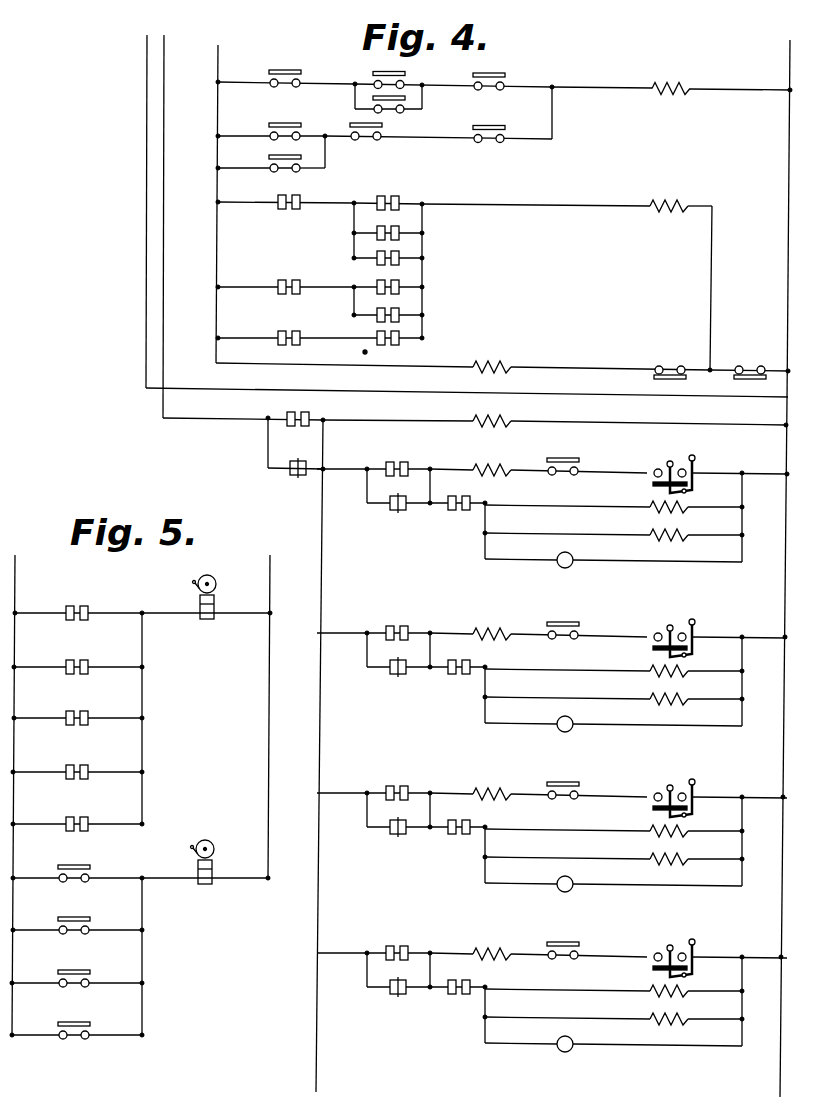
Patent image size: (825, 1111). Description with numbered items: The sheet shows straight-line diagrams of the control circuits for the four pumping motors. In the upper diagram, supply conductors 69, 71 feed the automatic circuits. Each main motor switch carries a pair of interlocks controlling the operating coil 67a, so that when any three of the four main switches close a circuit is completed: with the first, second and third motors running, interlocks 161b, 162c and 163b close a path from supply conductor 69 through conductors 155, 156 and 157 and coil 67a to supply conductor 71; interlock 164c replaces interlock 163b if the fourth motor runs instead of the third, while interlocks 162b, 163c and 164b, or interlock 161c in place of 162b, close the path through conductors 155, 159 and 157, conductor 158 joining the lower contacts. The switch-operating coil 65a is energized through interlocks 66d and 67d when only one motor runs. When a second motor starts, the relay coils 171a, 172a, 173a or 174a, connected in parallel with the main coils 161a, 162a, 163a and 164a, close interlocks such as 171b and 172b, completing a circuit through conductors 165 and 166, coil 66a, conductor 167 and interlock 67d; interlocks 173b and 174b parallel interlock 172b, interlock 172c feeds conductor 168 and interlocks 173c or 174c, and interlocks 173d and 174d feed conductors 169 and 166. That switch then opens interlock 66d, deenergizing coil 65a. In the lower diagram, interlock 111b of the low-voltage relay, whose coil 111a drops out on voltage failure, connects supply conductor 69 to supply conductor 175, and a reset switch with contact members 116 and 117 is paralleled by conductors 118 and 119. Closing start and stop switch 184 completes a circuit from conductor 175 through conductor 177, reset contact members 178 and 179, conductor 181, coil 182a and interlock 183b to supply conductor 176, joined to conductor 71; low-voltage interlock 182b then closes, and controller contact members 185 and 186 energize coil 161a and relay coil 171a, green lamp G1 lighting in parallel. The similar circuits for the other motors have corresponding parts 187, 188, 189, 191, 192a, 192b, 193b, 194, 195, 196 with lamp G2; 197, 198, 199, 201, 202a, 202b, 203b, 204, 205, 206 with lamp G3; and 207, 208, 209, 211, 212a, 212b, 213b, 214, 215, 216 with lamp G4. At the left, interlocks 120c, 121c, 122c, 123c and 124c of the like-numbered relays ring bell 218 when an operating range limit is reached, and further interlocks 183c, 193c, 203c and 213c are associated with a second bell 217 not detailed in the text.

In FIG. 4, the supply conductor 69 is at (218, 52).
In FIG. 5, the supply conductor 69 is at (15, 564).
In FIG. 4, the supply conductor 71 is at (789, 45).
In FIG. 5, the supply conductor 71 is at (270, 601).
In FIG. 4, the conductor 155 is at (331, 82).
In FIG. 4, the conductor 156 is at (452, 95).
In FIG. 4, the conductor 157 is at (593, 90).
In FIG. 4, the conductor 158 is at (330, 141).
In FIG. 4, the conductor 159 is at (440, 140).
In FIG. 4, the interlock 161b is at (287, 68).
In FIG. 4, the interlock 162b is at (270, 119).
In FIG. 4, the interlock 161c is at (258, 157).
In FIG. 4, the interlock 163b is at (396, 69).
In FIG. 4, the interlock 162c is at (495, 70).
In FIG. 4, the interlock 164c is at (403, 111).
In FIG. 4, the interlock 164b is at (512, 115).
In FIG. 4, the interlock 163c is at (372, 146).
In FIG. 4, the operating coil 67a is at (648, 86).
In FIG. 4, the coil 66a is at (672, 203).
In FIG. 4, the switch-operating coil 65a is at (498, 363).
In FIG. 4, the interlock 66d is at (667, 366).
In FIG. 4, the interlock 67d is at (750, 366).
In FIG. 4, the interlock 171b is at (282, 197).
In FIG. 4, the conductor 165 is at (323, 204).
In FIG. 4, the interlock 172b is at (400, 203).
In FIG. 4, the conductor 166 is at (519, 206).
In FIG. 4, the conductor 167 is at (712, 283).
In FIG. 4, the interlock 173b is at (424, 232).
In FIG. 4, the interlock 174b is at (424, 258).
In FIG. 4, the interlock 173c is at (424, 287).
In FIG. 4, the interlock 174c is at (424, 315).
In FIG. 4, the interlock 174d is at (424, 338).
In FIG. 4, the interlock 172c is at (285, 296).
In FIG. 4, the conductor 168 is at (325, 289).
In FIG. 4, the interlock 173d is at (284, 346).
In FIG. 4, the conductor 169 is at (327, 339).
In FIG. 5, the interlock 111b is at (297, 413).
In FIG. 5, the coil 111a is at (513, 422).
In FIG. 5, the conductor 118 is at (267, 451).
In FIG. 5, the contact member 117 is at (277, 481).
In FIG. 5, the contact member 116 is at (285, 467).
In FIG. 5, the conductor 119 is at (310, 472).
In FIG. 5, the supply conductor 175 is at (321, 534).
In FIG. 5, the supply conductor 176 is at (784, 612).
In FIG. 5, the conductor 177 is at (365, 476).
In FIG. 5, the low-voltage interlock 182b is at (401, 458).
In FIG. 5, the coil 182a is at (538, 458).
In FIG. 5, the interlock 183b is at (566, 457).
In FIG. 5, the start and stop switch 184 is at (669, 463).
In FIG. 5, the conductor 181 is at (431, 486).
In FIG. 5, the contact member 186 is at (486, 502).
In FIG. 5, the reset contact member 178 is at (395, 514).
In FIG. 5, the reset contact member 179 is at (393, 511).
In FIG. 5, the contact member 185 is at (457, 511).
In FIG. 5, the operating coil 161a is at (650, 509).
In FIG. 5, the relay operating coil 171a is at (655, 537).
In FIG. 5, the green lamp G1 is at (557, 565).
In FIG. 5, the conductor 187 is at (343, 661).
In FIG. 5, the relay contact 192b is at (397, 617).
In FIG. 5, the relay winding 192a is at (538, 617).
In FIG. 5, the relay contact 193b is at (559, 618).
In FIG. 5, the manual switch 194 is at (708, 662).
In FIG. 5, the conductor 191 is at (449, 650).
In FIG. 5, the conductor 196 is at (469, 694).
In FIG. 5, the contact 188 is at (392, 683).
In FIG. 5, the contact 189 is at (398, 680).
In FIG. 5, the contact 195 is at (450, 691).
In FIG. 5, the operating coil 162a is at (614, 661).
In FIG. 5, the relay coil 172a is at (614, 690).
In FIG. 5, the green lamp G2 is at (613, 717).
In FIG. 5, the conductor 197 is at (343, 809).
In FIG. 5, the relay contact 202b is at (398, 780).
In FIG. 5, the relay winding 202a is at (538, 780).
In FIG. 5, the relay contact 203b is at (570, 779).
In FIG. 5, the manual switch 204 is at (710, 823).
In FIG. 5, the conductor 201 is at (447, 810).
In FIG. 5, the conductor 205 is at (496, 844).
In FIG. 5, the contact 198 is at (388, 839).
In FIG. 5, the contact 199 is at (399, 839).
In FIG. 5, the contact 206 is at (457, 847).
In FIG. 5, the operating coil 163a is at (614, 822).
In FIG. 5, the relay coil 173a is at (614, 851).
In FIG. 5, the green lamp G3 is at (613, 875).
In FIG. 5, the conductor 207 is at (343, 969).
In FIG. 5, the relay contact 212b is at (393, 943).
In FIG. 5, the relay winding 212a is at (538, 943).
In FIG. 5, the relay contact 213b is at (576, 942).
In FIG. 5, the manual switch 214 is at (711, 985).
In FIG. 5, the conductor 211 is at (446, 970).
In FIG. 5, the conductor 216 is at (495, 1004).
In FIG. 5, the contact 208 is at (383, 1005).
In FIG. 5, the contact 209 is at (398, 1005).
In FIG. 5, the contact 215 is at (452, 999).
In FIG. 5, the operating coil 164a is at (614, 982).
In FIG. 5, the relay coil 174a is at (614, 1011).
In FIG. 5, the green lamp G4 is at (613, 1038).
In FIG. 5, the interlock 120c is at (70, 607).
In FIG. 5, the interlock 121c is at (70, 661).
In FIG. 5, the interlock 122c is at (73, 712).
In FIG. 5, the interlock 123c is at (73, 766).
In FIG. 5, the interlock 124c is at (73, 818).
In FIG. 5, the relay contact 183c is at (72, 866).
In FIG. 5, the relay contact 193c is at (70, 918).
In FIG. 5, the relay contact 203c is at (74, 971).
In FIG. 5, the relay contact 213c is at (68, 1023).
In FIG. 5, the bell 218 is at (207, 619).
In FIG. 5, the alarm bell 217 is at (211, 889).